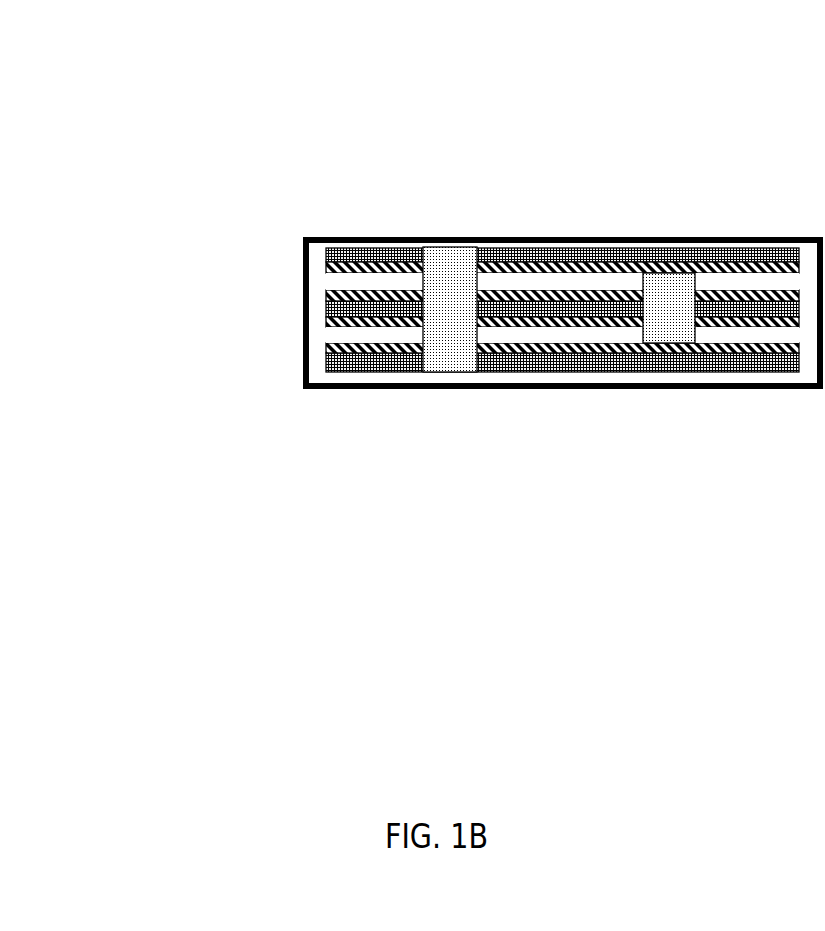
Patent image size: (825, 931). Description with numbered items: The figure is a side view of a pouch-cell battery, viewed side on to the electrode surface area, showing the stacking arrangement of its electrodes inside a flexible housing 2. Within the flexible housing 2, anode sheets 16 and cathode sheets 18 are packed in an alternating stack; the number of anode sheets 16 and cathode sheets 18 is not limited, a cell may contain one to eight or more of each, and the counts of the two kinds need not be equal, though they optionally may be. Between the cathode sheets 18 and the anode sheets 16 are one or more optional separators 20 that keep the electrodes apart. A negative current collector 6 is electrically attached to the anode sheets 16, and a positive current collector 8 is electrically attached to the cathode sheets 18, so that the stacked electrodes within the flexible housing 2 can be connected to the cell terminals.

The flexible housing 2 is at (274, 346).
The negative current collector 6 is at (446, 261).
The positive current collector 8 is at (647, 257).
The anode sheets 16 is at (735, 362).
The cathode sheets 18 is at (325, 282).
The separators 20 is at (407, 335).